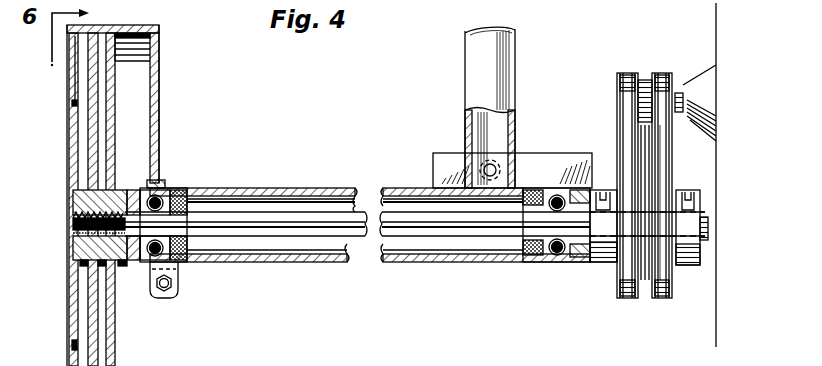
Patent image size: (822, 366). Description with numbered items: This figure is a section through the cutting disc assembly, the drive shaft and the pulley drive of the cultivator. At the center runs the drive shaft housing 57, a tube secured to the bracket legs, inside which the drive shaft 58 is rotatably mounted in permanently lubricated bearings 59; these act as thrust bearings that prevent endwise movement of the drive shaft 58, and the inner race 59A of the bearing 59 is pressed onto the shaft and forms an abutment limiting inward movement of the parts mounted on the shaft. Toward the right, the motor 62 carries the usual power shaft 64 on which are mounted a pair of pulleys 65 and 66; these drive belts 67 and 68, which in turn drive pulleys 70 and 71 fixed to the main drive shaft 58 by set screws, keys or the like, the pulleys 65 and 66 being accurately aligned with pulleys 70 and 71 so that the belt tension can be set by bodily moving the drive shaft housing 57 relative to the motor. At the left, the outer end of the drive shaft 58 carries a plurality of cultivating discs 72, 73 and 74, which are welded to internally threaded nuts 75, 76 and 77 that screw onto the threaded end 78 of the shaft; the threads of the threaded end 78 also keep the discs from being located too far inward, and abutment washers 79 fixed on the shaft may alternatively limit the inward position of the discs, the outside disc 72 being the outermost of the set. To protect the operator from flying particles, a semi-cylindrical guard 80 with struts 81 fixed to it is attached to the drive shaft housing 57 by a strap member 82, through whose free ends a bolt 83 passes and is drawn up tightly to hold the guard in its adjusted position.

The drive shaft housing 57 is at (296, 263).
The drive shaft 58 is at (465, 230).
The bearings 59 is at (182, 262).
The inner race 59A is at (141, 190).
The motor 62 is at (704, 85).
The power shaft 64 is at (680, 93).
The pulley 65 is at (620, 84).
The pulley 66 is at (655, 84).
The belt 67 is at (629, 137).
The belt 68 is at (662, 149).
The pulley 70 is at (616, 272).
The pulley 71 is at (655, 298).
The cultivating disc 72 is at (73, 345).
The cultivating disc 73 is at (90, 306).
The cultivating disc 74 is at (111, 323).
The internally threaded nut 75 is at (86, 250).
The internally threaded nut 76 is at (96, 262).
The internally threaded nut 77 is at (120, 264).
The threaded end 78 is at (73, 222).
The abutment washers 79 is at (130, 192).
The semi-cylindrical guard 80 is at (124, 30).
The struts 81 is at (158, 95).
The strap member 82 is at (165, 184).
The bolt 83 is at (164, 298).